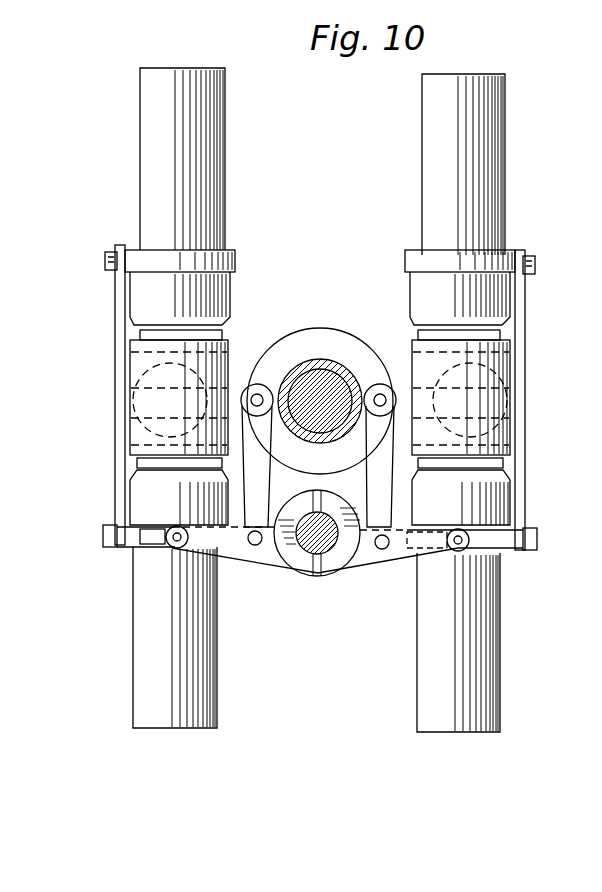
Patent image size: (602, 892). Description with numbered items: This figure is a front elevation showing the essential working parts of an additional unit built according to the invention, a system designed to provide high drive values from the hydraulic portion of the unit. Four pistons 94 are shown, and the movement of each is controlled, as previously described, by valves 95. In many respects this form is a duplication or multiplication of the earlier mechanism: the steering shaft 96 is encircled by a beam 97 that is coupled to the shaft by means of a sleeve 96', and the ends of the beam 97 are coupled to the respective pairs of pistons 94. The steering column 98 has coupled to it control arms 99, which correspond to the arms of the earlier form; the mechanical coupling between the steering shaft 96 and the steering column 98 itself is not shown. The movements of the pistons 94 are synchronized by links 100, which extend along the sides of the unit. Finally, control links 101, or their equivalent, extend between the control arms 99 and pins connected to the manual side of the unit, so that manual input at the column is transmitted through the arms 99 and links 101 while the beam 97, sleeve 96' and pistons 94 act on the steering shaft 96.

The piston 94 is at (208, 163).
The valve 95 is at (228, 297).
The steering shaft 96 is at (320, 366).
The sleeve 96' is at (314, 359).
The beam 97 is at (240, 365).
The steering column 98 is at (308, 543).
The control arm 99 is at (405, 560).
The link 100 is at (118, 384).
The control link 101 is at (368, 483).